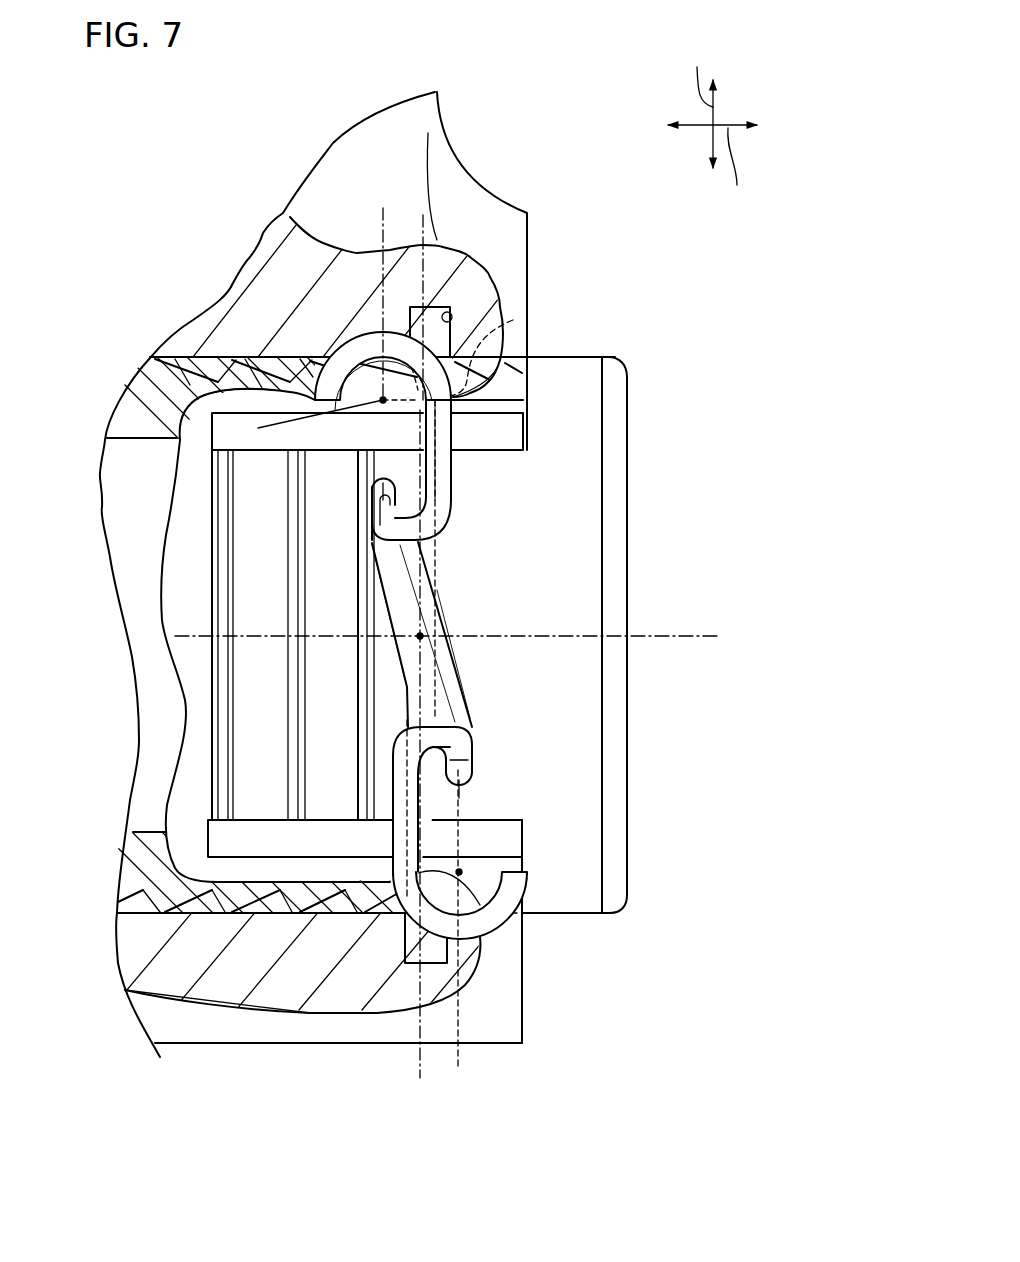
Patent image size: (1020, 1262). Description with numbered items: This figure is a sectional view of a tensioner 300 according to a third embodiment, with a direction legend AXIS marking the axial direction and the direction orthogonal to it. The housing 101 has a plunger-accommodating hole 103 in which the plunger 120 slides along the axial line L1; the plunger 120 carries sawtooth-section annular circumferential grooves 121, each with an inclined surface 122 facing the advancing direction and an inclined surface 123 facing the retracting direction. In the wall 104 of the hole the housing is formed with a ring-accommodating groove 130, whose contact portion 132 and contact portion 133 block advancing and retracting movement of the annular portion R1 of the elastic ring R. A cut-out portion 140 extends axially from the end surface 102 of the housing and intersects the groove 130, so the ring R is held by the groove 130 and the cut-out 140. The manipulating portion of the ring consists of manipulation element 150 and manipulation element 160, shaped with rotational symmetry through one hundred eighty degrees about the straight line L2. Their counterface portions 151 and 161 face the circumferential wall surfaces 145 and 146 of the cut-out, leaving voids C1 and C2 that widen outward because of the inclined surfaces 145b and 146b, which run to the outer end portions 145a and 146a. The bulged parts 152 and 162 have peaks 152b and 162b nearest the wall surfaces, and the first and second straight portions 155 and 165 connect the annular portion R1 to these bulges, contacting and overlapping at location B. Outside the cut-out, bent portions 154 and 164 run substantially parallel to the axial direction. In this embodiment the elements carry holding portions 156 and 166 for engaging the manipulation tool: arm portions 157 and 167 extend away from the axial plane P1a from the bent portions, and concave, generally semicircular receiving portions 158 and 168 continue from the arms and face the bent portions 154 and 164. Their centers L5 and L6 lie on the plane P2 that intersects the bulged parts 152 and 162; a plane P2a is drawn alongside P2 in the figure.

The tensioner 300 is at (533, 112).
The housing 101 is at (190, 1049).
The end surface 102 is at (505, 1005).
The plunger-accommodating hole 103 is at (278, 915).
The wall 104 is at (490, 379).
The plunger 120 is at (598, 352).
The annular circumferential grooves 121 is at (207, 378).
The inclined surface 122 is at (272, 383).
The inclined surface 123 is at (290, 383).
The ring-accommodating groove 130 is at (442, 1045).
The contact portion 132 is at (450, 312).
The contact portion 133 is at (411, 308).
The cut-out portion 140 is at (255, 798).
The circumferential wall surface 145 is at (495, 813).
The outer end portion 145a is at (217, 875).
The inclined surface 145b is at (257, 838).
The circumferential wall surface 146 is at (493, 456).
The outer end portion 146a is at (277, 390).
The inclined surface 146b is at (487, 430).
The manipulation element 150 is at (470, 695).
The counterface portion 151 is at (480, 742).
The bulged part 152 is at (480, 768).
The peak 152b is at (468, 793).
The bent portion 154 is at (390, 725).
The first straight portion 155 is at (440, 667).
The first holding portion 156 is at (368, 900).
The arm portion 157 is at (395, 836).
The first receiving portion 158 is at (490, 920).
The manipulation element 160 is at (370, 590).
The counterface portion 161 is at (355, 524).
The bulged part 162 is at (378, 497).
The peak 162b is at (378, 478).
The bent portion 164 is at (410, 560).
The second straight portion 165 is at (395, 605).
The second holding portion 166 is at (460, 404).
The arm portion 167 is at (440, 485).
The second receiving portion 168 is at (365, 345).
The overlap location B is at (395, 680).
The elastic ring R is at (493, 552).
The annular portion R1 is at (513, 320).
The void C1 is at (459, 872).
The void C2 is at (386, 465).
The axial line L1 is at (188, 634).
The straight line L2 is at (423, 635).
The center L5 is at (465, 868).
The center L6 is at (307, 421).
The axial plane P1a is at (672, 635).
The plane P2 is at (383, 235).
The axis P2a is at (440, 235).
The direction legend AXIS is at (711, 115).